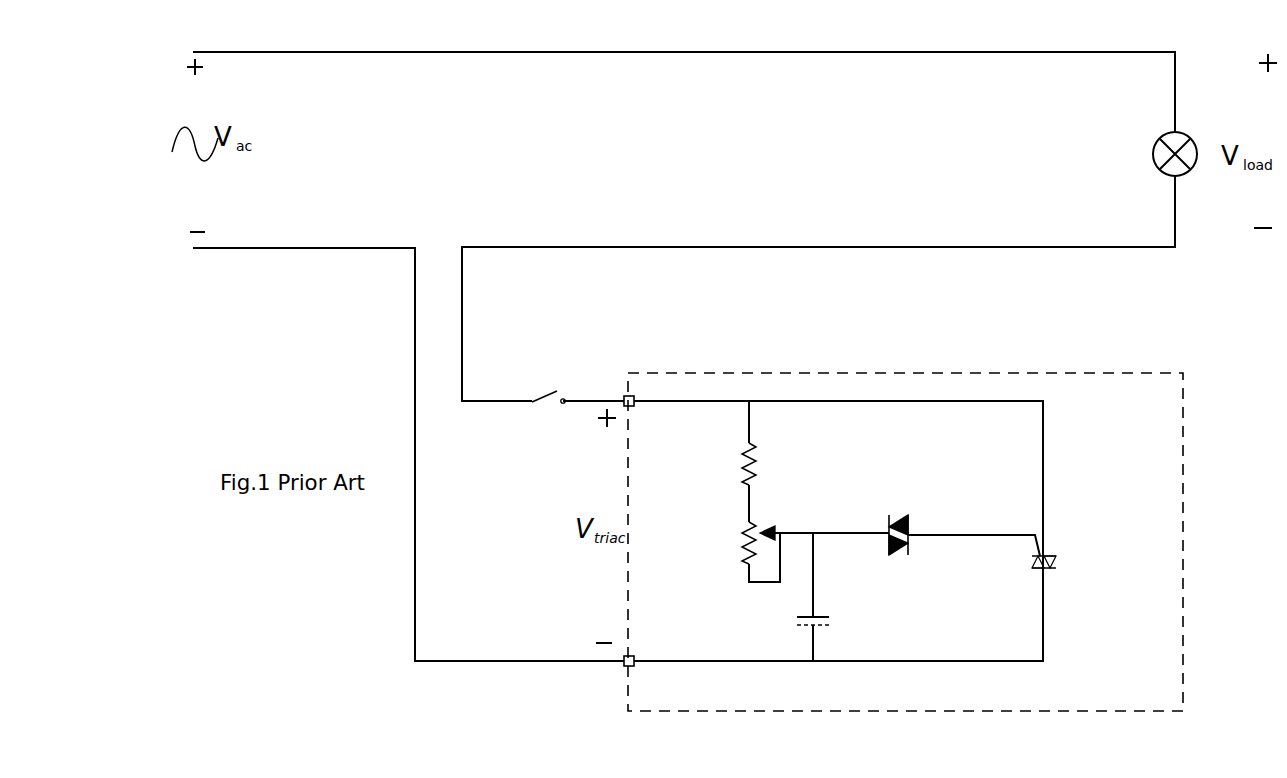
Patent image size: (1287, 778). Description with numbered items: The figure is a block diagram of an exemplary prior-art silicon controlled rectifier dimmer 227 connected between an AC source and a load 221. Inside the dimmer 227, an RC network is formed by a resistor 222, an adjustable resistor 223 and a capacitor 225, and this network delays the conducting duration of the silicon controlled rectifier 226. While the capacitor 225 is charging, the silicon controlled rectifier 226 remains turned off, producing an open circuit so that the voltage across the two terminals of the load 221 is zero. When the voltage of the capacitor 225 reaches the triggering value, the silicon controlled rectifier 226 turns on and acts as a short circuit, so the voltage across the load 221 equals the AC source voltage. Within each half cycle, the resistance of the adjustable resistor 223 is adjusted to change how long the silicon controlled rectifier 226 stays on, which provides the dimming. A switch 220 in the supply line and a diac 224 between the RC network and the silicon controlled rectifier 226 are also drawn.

The switch 220 is at (543, 386).
The load 221 is at (1186, 127).
The resistor 222 is at (768, 458).
The adjustable resistor 223 is at (771, 519).
The diac 224 is at (900, 508).
The capacitor 225 is at (832, 617).
The silicon controlled rectifier 226 is at (1058, 548).
The silicon controlled rectifier dimmer 227 is at (905, 542).